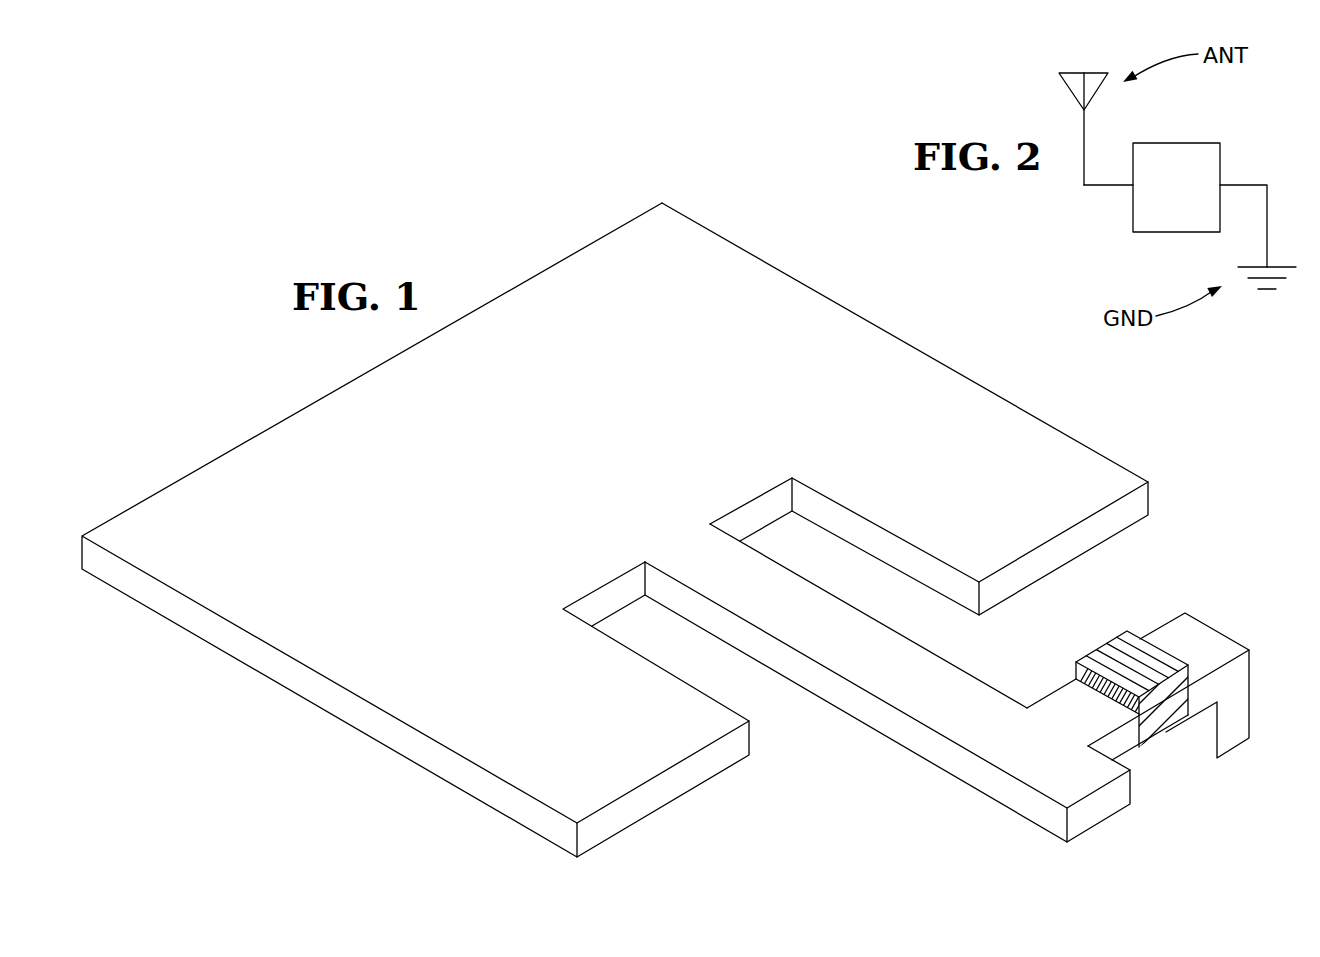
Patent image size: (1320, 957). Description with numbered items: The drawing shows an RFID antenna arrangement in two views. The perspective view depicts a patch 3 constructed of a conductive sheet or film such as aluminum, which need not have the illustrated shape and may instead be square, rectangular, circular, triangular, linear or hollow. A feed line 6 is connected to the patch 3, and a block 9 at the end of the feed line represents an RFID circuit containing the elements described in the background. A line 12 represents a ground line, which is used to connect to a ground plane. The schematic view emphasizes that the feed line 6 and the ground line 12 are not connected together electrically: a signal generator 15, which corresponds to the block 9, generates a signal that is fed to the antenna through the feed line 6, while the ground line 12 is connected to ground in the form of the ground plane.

In FIG. 1, the patch 3 is at (548, 418).
In FIG. 1, the feed line 6 is at (860, 714).
In FIG. 2, the feed line 6 is at (1106, 186).
In FIG. 1, the RFID circuit block 9 is at (1105, 646).
In FIG. 1, the ground line 12 is at (1216, 630).
In FIG. 2, the ground line 12 is at (1247, 184).
In FIG. 2, the signal generator 15 is at (1190, 197).